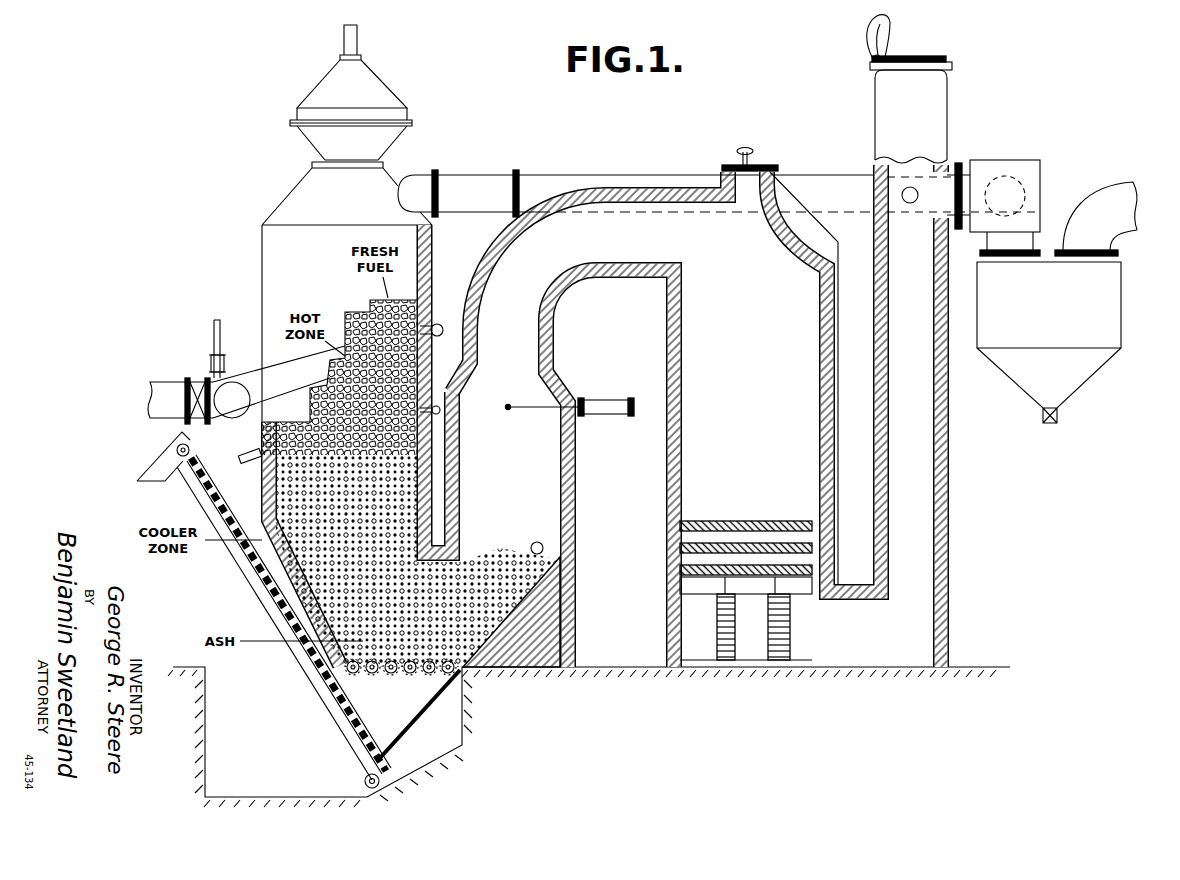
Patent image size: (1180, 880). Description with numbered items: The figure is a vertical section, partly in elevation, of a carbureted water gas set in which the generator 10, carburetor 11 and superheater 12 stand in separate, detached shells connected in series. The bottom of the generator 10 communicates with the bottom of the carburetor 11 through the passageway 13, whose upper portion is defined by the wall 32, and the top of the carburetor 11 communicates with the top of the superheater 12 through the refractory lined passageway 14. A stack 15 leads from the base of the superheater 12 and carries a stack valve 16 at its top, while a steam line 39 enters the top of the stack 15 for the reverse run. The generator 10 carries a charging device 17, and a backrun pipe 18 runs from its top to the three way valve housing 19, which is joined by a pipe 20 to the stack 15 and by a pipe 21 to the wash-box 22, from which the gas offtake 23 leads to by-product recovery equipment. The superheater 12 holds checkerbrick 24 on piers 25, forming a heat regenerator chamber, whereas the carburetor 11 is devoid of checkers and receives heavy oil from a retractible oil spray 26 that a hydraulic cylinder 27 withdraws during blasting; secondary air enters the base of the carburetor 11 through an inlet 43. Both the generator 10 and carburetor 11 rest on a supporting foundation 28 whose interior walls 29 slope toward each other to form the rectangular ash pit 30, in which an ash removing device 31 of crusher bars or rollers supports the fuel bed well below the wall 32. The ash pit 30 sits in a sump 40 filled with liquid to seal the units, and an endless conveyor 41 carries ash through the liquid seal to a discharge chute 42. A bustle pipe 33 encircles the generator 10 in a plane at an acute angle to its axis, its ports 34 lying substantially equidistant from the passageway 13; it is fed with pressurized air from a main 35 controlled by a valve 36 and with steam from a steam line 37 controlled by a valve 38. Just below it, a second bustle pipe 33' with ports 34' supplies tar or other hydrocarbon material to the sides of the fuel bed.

The generator 10 is at (218, 508).
The carburetor 11 is at (560, 466).
The superheater 12 is at (667, 334).
The passageway 13 is at (452, 593).
The refractory lined passageway 14 is at (592, 232).
The stack 15 is at (947, 587).
The stack valve 16 is at (868, 45).
The charging device 17 is at (395, 95).
The backrun pipe 18 is at (470, 176).
The three way valve housing 19 is at (1015, 160).
The pipe 20 is at (960, 164).
The pipe 21 is at (987, 242).
The wash-box 22 is at (1110, 305).
The gas offtake 23 is at (1103, 188).
The checkerbrick 24 is at (762, 540).
The piers 25 is at (790, 635).
The retractible oil spray 26 is at (508, 411).
The hydraulic cylinder 27 is at (610, 398).
The supporting foundation 28 is at (577, 621).
The interior walls 29 is at (527, 603).
The ash pit 30 is at (410, 705).
The ash removing device 31 is at (410, 676).
The wall 32 is at (460, 504).
The bustle pipe 33 is at (279, 375).
The second bustle pipe 33' is at (238, 442).
The ports 34 is at (442, 348).
The ports 34' is at (254, 485).
The main 35 is at (150, 406).
The valve 36 is at (192, 380).
The steam line 37 is at (214, 320).
The valve 38 is at (208, 360).
The steam line 39 is at (910, 204).
The sump 40 is at (589, 737).
The endless conveyor 41 is at (235, 565).
The discharge chute 42 is at (157, 482).
The inlet 43 is at (537, 541).